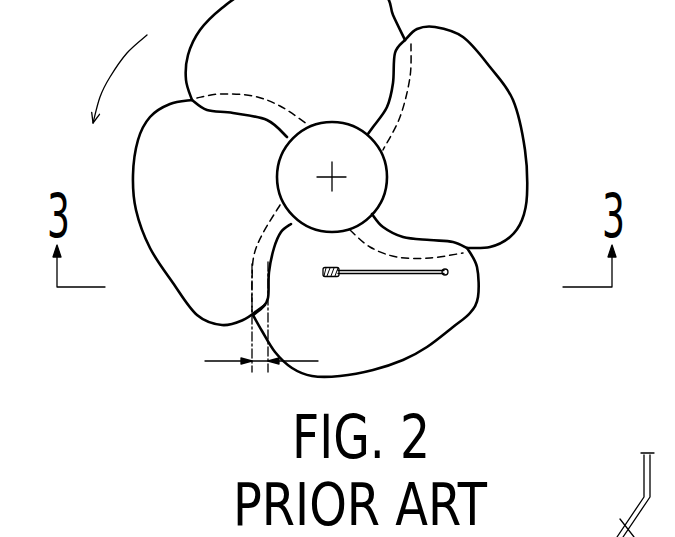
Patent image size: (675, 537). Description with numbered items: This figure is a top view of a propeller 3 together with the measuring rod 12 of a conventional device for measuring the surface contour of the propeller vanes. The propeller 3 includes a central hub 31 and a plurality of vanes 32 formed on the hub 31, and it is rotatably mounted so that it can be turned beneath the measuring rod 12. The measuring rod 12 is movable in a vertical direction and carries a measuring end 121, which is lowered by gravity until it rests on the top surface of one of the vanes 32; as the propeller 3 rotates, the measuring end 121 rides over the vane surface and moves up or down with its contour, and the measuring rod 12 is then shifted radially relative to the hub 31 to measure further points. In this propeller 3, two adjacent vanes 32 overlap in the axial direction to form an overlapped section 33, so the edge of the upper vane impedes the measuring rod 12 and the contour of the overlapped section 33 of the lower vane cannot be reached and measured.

The propeller 3 is at (367, 188).
The hub 31 is at (293, 170).
The vane 32 is at (503, 135).
The overlapped section 33 is at (260, 367).
The measuring rod 12 is at (420, 341).
The measuring end 121 is at (337, 278).